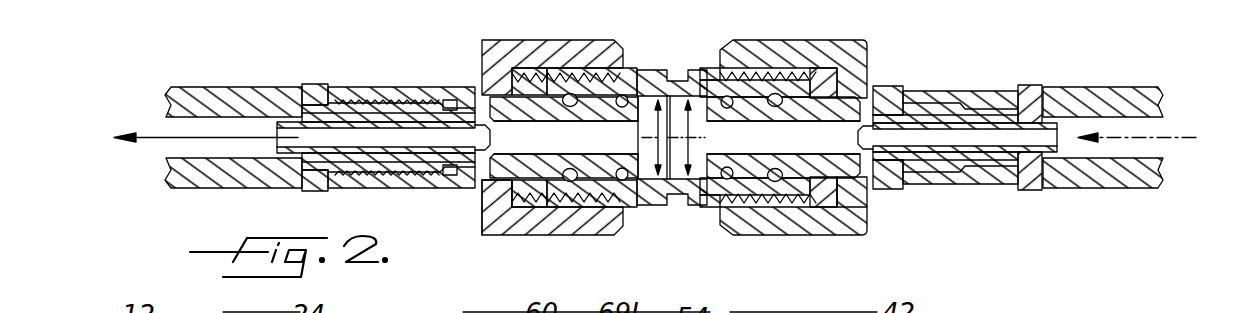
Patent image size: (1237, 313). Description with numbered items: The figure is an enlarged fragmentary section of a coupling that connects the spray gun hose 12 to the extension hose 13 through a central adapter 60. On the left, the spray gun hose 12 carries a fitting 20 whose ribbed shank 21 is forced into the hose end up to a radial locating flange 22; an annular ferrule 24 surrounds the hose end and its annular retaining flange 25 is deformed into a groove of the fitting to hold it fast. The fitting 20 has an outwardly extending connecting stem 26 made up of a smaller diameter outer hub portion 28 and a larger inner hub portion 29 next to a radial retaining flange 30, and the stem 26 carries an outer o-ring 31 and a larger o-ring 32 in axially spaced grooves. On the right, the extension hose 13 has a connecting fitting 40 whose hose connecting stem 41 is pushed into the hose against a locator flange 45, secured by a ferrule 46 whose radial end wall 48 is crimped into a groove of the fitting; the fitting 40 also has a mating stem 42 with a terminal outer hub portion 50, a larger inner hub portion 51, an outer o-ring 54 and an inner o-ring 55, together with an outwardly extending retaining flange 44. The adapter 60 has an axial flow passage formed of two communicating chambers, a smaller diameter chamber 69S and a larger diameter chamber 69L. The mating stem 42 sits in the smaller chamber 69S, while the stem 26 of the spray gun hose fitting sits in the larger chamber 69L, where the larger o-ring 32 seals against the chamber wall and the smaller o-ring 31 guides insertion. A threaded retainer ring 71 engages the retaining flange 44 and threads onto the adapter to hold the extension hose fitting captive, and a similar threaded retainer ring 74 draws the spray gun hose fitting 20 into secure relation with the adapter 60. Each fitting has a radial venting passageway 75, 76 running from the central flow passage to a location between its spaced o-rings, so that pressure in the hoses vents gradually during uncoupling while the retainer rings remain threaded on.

The spray gun hose 12 is at (190, 84).
The extension hose 13 is at (1137, 90).
The fitting 20 is at (498, 94).
The ribbed shank 21 is at (297, 158).
The radial locating flange 22 is at (440, 188).
The annular ferrule 24 is at (340, 85).
The annular retaining flange 25 is at (462, 110).
The connecting stem 26 is at (537, 98).
The outer hub portion 28 is at (633, 173).
The inner hub portion 29 is at (556, 200).
The radial retaining flange 30 is at (512, 188).
The outer o-ring 31 is at (613, 190).
The o-ring 32 is at (568, 190).
The connecting fitting 40 is at (870, 79).
The hose connecting stem 41 is at (1053, 154).
The mating stem 42 is at (813, 97).
The retaining flange 44 is at (815, 213).
The locator flange 45 is at (898, 165).
The ferrule 46 is at (994, 188).
The radial end wall 48 is at (892, 172).
The terminal outer hub portion 50 is at (715, 99).
The inner hub portion 51 is at (782, 188).
The outer o-ring 54 is at (740, 187).
The inner o-ring 55 is at (773, 190).
The adapter 60 is at (670, 73).
The larger diameter chamber 69L is at (655, 116).
The smaller diameter chamber 69S is at (682, 160).
The threaded retainer ring 71 is at (853, 224).
The threaded retainer ring 74 is at (510, 231).
The radial venting passageway 75 is at (600, 163).
The radial venting passageway 76 is at (755, 133).